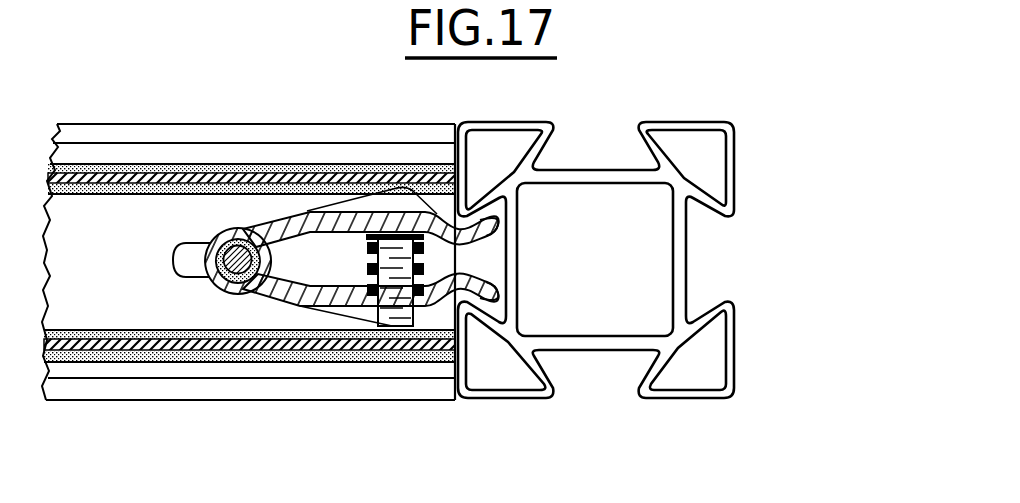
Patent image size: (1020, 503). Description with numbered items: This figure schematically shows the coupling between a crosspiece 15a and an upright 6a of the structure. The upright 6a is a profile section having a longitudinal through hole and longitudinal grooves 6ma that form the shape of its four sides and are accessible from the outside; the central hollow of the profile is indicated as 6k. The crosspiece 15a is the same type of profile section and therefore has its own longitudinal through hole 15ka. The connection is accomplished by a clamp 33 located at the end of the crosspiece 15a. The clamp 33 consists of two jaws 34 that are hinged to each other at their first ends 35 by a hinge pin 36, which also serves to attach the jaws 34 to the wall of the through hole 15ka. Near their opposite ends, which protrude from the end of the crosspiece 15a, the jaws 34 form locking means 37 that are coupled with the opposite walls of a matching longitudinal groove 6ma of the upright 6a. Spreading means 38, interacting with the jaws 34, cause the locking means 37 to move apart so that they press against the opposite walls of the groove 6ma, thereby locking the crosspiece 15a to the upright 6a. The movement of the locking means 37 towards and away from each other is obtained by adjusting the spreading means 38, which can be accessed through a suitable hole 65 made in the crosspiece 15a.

The crosspiece 15a is at (75, 406).
The longitudinal through hole 15ka is at (123, 218).
The hole 65 is at (352, 352).
The jaws 34 is at (308, 210).
The first ends 35 is at (228, 216).
The hinge pin 36 is at (234, 276).
The clamp 33 is at (204, 287).
The locking means 37 is at (492, 243).
The spreading means 38 is at (395, 328).
The longitudinal groove 6ma is at (588, 140).
The upright 6a is at (742, 171).
The central chamber 6k is at (638, 228).